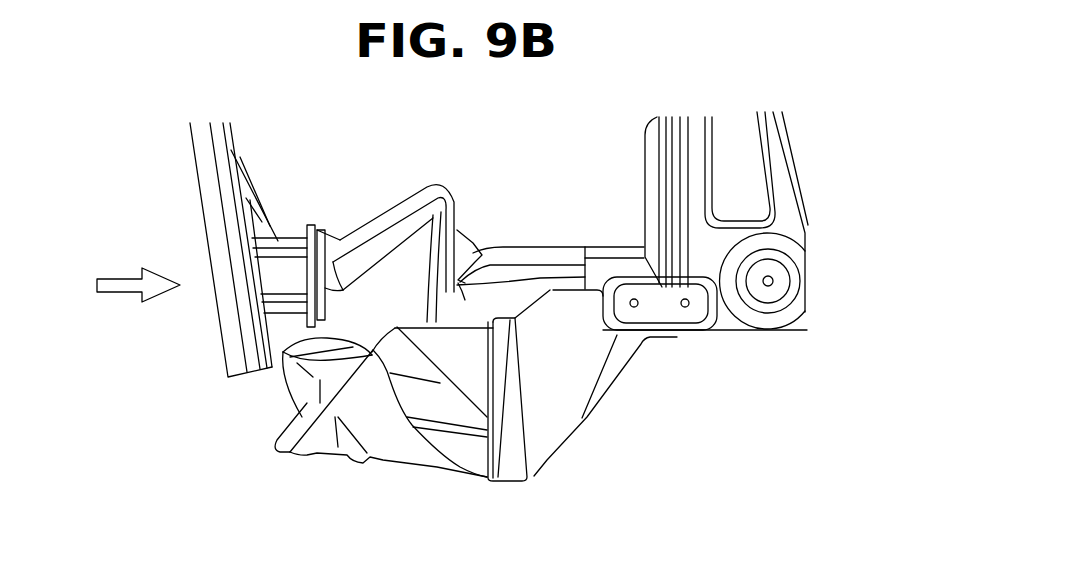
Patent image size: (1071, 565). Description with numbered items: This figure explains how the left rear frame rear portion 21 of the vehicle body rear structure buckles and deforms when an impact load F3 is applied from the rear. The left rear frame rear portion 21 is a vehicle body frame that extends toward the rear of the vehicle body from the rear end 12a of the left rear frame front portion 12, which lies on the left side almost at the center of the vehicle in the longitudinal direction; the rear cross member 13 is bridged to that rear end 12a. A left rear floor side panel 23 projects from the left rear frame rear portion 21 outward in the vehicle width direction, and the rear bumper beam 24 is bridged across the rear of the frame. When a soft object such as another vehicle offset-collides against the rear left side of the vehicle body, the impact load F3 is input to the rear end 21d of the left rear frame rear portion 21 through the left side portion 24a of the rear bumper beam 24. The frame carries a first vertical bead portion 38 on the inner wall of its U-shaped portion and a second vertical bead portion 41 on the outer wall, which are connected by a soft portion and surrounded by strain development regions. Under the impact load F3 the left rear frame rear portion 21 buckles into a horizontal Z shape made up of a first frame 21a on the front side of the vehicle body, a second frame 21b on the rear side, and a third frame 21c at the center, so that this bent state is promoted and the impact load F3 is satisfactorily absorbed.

The left rear frame front portion 12 is at (722, 322).
The rear end of the left rear frame front portion 12a is at (607, 260).
The rear cross member 13 is at (780, 158).
The left rear frame rear portion 21 is at (435, 180).
The first frame 21a is at (524, 293).
The second frame 21b is at (398, 223).
The third frame 21c is at (457, 243).
The rear end of the left rear frame rear portion 21d is at (308, 276).
The left rear floor side panel 23 is at (405, 458).
The rear bumper beam 24 is at (205, 159).
The left side portion of the rear bumper beam 24a is at (227, 318).
The first vertical bead portion 38 is at (465, 287).
The second vertical bead portion 41 is at (493, 350).
The impact load F3 is at (112, 296).